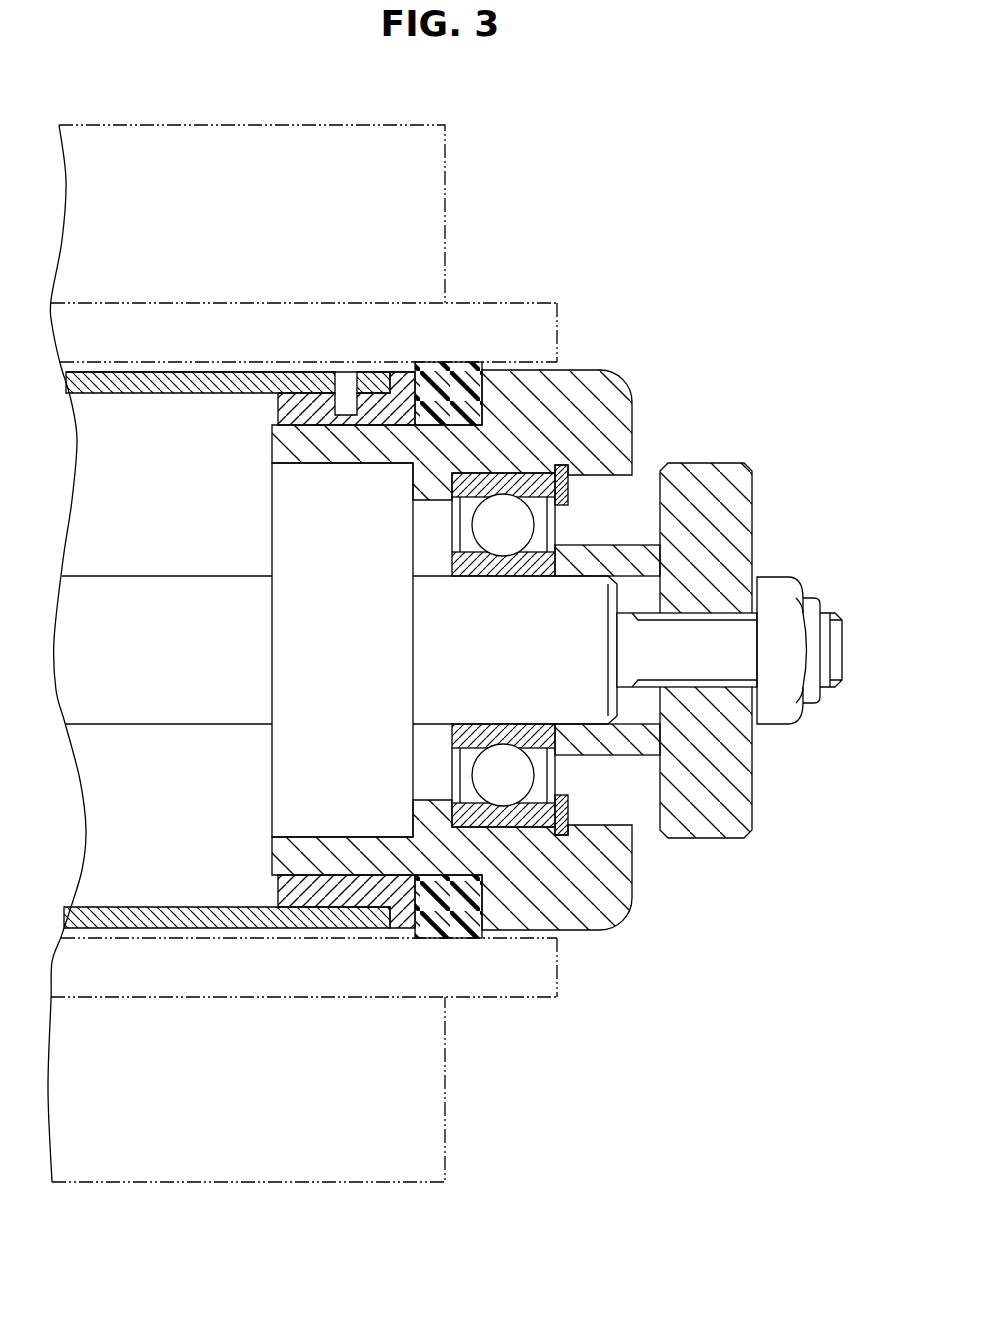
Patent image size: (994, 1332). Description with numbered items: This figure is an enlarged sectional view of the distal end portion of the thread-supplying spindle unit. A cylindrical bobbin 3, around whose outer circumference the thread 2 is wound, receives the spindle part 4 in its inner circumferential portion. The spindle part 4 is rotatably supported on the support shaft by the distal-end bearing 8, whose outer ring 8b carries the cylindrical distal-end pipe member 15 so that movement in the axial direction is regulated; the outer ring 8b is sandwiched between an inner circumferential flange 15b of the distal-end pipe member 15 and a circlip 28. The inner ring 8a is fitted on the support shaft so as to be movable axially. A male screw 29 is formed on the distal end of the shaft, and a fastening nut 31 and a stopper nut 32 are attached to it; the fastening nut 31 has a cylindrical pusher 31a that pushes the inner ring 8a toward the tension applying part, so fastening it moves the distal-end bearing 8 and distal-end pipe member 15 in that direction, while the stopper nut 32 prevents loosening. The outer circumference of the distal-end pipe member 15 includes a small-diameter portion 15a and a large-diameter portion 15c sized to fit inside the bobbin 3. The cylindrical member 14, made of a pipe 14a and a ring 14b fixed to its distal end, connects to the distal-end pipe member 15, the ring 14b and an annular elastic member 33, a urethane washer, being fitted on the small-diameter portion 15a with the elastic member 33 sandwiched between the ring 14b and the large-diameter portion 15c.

The thread 2 is at (327, 125).
The bobbin 3 is at (395, 303).
The spindle part 4 is at (630, 384).
The distal-end bearing 8 is at (369, 774).
The inner ring 8a is at (455, 735).
The outer ring 8b is at (523, 817).
The cylindrical member 14 is at (239, 551).
The pipe 14a is at (173, 383).
The ring 14b is at (308, 403).
The distal-end pipe member 15 is at (400, 552).
The small-diameter portion 15a is at (300, 443).
The inner circumferential flange 15b is at (425, 805).
The large-diameter portion 15c is at (525, 400).
The circlip 28 is at (563, 830).
The male screw 29 is at (683, 635).
The fastening nut 31 is at (653, 725).
The cylindrical pusher 31a is at (585, 747).
The stopper nut 32 is at (780, 578).
The elastic member 33 is at (455, 383).